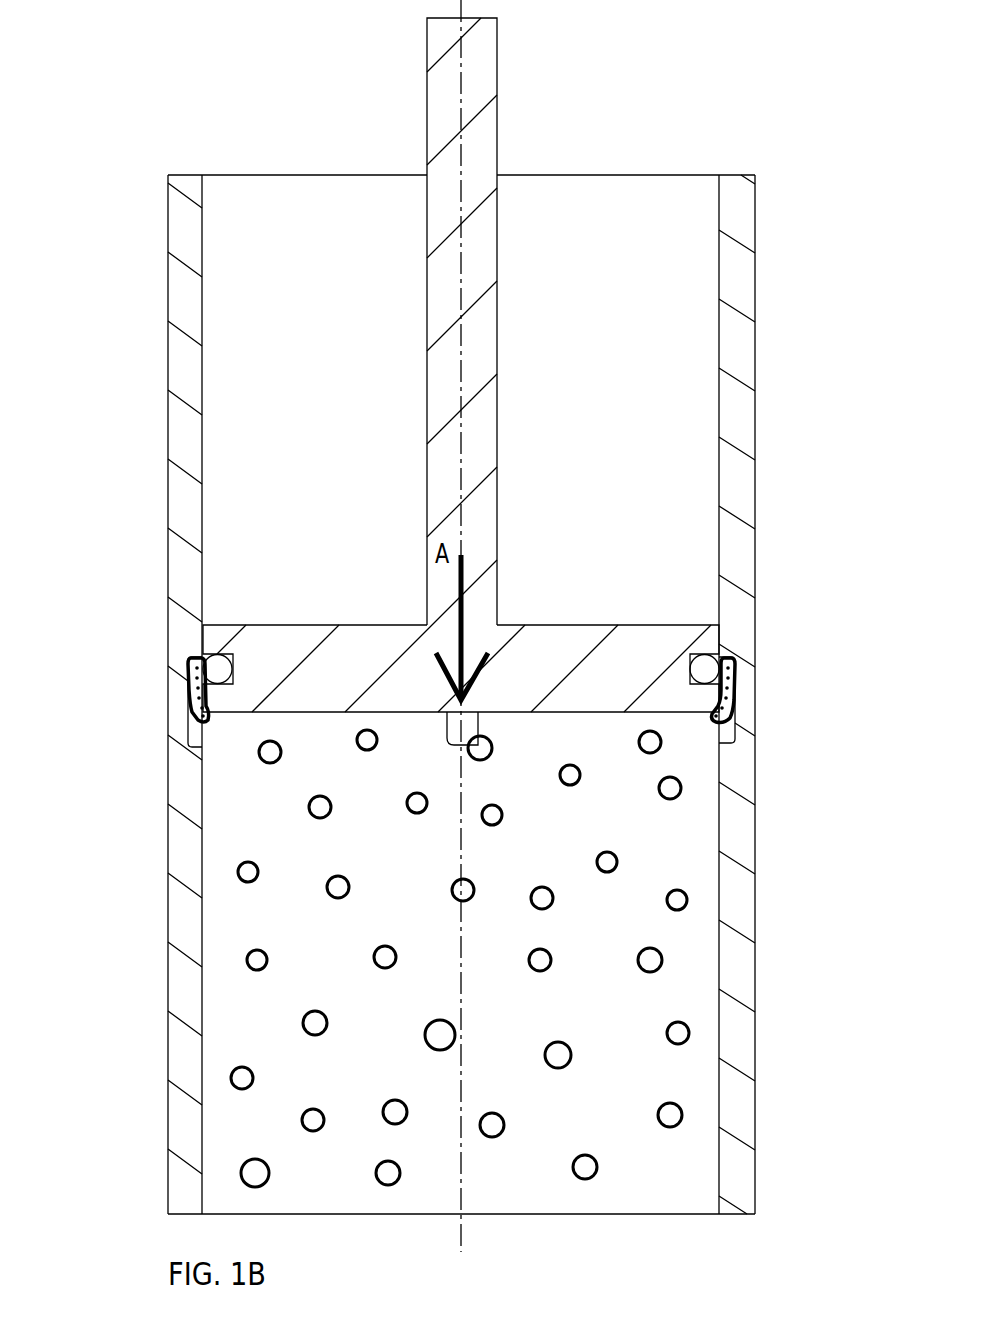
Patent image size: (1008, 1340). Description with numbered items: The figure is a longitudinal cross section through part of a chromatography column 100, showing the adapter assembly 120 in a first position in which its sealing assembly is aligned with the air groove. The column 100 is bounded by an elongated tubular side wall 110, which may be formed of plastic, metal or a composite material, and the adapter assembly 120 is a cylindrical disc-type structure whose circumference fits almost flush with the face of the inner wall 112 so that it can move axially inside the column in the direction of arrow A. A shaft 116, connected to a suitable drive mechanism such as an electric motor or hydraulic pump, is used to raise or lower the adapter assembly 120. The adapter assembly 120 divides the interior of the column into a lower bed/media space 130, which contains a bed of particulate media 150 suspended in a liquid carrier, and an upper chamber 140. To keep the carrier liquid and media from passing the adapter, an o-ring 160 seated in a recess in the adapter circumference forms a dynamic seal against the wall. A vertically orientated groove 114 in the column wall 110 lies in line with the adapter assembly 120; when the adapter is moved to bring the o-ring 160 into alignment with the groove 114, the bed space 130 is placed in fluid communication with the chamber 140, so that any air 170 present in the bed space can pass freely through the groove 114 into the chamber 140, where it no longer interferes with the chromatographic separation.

The chromatography column 100 is at (803, 205).
The tubular side wall 110 is at (185, 443).
The inner wall 112 is at (718, 378).
The groove 114 is at (727, 733).
The shaft 116 is at (480, 340).
The adapter assembly 120 is at (362, 647).
The bed/media space 130 is at (658, 843).
The chamber 140 is at (655, 467).
The particulate media 150 is at (680, 788).
The o-ring 160 is at (707, 660).
The air 170 is at (733, 692).